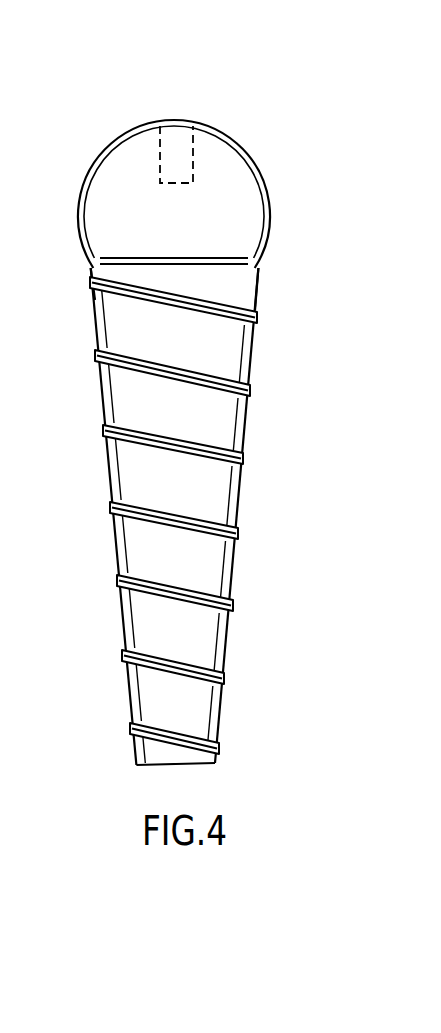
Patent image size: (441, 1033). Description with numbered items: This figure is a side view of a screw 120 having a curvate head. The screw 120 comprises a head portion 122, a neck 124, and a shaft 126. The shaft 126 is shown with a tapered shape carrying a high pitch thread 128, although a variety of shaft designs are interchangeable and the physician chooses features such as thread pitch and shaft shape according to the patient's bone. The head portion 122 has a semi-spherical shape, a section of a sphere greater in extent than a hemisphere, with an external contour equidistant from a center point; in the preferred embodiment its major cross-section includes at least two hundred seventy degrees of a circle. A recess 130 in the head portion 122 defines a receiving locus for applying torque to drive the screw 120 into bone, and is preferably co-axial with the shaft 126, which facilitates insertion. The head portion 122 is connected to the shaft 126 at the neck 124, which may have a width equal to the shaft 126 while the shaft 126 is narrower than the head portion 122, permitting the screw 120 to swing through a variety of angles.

The screw 120 is at (320, 308).
The head portion 122 is at (238, 175).
The neck 124 is at (237, 288).
The shaft 126 is at (225, 424).
The high pitch thread 128 is at (248, 391).
The recess 130 is at (180, 138).